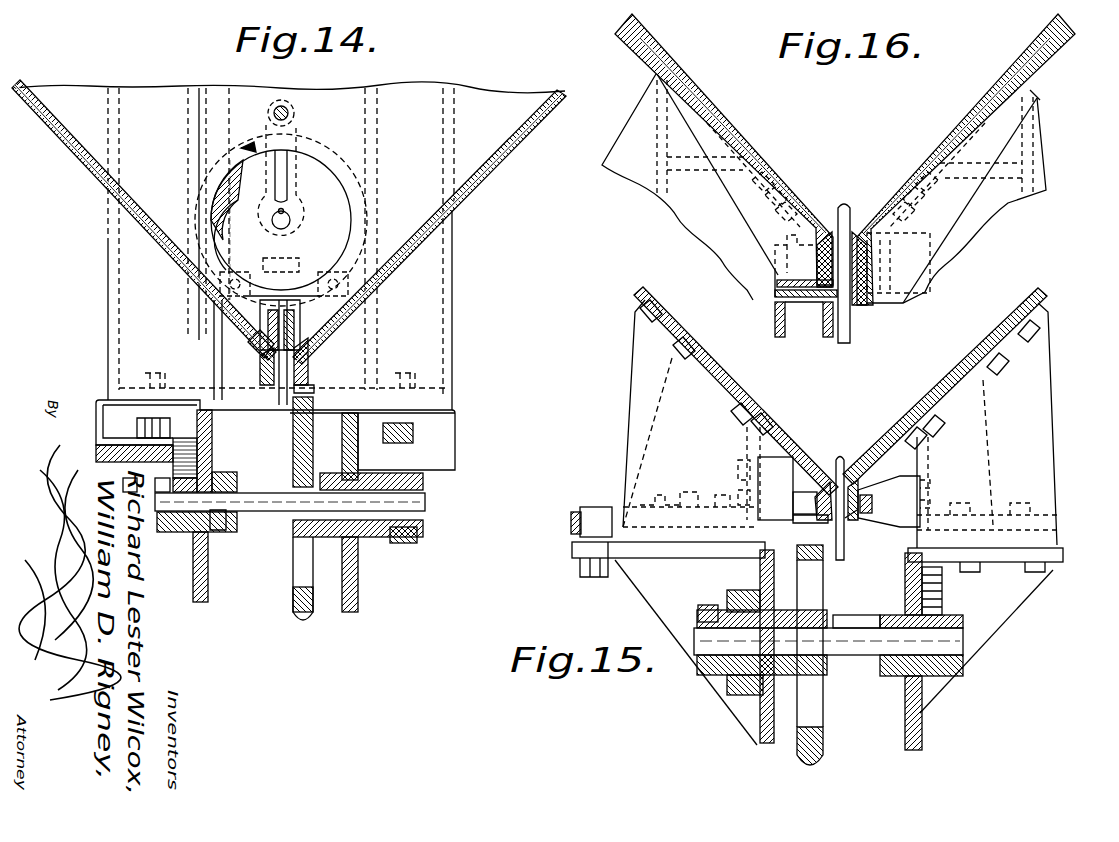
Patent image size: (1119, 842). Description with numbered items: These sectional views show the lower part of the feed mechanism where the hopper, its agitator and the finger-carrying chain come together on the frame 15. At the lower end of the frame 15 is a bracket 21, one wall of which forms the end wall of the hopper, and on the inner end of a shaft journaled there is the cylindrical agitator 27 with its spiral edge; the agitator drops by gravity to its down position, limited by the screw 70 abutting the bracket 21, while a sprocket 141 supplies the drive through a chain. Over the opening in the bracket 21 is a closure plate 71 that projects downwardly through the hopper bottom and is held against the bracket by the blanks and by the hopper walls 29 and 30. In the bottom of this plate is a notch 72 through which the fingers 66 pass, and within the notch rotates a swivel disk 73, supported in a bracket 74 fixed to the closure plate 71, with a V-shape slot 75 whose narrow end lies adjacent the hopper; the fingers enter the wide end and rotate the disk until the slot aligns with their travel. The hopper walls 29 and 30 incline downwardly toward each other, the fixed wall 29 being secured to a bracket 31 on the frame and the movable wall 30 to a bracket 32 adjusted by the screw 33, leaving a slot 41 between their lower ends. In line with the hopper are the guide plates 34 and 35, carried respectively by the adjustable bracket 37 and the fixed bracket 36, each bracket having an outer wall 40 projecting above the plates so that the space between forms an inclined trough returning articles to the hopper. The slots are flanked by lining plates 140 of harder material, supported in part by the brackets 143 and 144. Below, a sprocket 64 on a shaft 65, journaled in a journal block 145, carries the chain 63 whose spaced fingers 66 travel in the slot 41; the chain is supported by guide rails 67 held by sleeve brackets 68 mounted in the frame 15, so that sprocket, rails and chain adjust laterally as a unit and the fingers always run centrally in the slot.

In FIG. 14, the frame 15 is at (193, 570).
In FIG. 15, the frame 15 is at (647, 595).
In FIG. 14, the bracket 21 is at (125, 250).
In FIG. 14, the agitator 27 is at (335, 198).
In FIG. 14, the fixed hopper wall 29 is at (43, 101).
In FIG. 15, the fixed hopper wall 29 is at (1012, 332).
In FIG. 14, the movable hopper wall 30 is at (560, 92).
In FIG. 15, the movable hopper wall 30 is at (682, 300).
In FIG. 15, the bracket 31 is at (1052, 460).
In FIG. 15, the bracket 32 is at (638, 412).
In FIG. 15, the screw 33 is at (577, 512).
In FIG. 16, the guide plate 34 is at (752, 148).
In FIG. 16, the guide plate 35 is at (945, 145).
In FIG. 16, the bracket 36 is at (1032, 150).
In FIG. 16, the bracket 37 is at (635, 132).
In FIG. 16, the wall 40 is at (1035, 92).
In FIG. 15, the slot 41 is at (846, 522).
In FIG. 14, the sprocket chain 63 is at (316, 389).
In FIG. 16, the sprocket chain 63 is at (775, 293).
In FIG. 15, the sprocket chain 63 is at (820, 524).
In FIG. 14, the sprocket 64 is at (299, 618).
In FIG. 15, the sprocket 64 is at (825, 722).
In FIG. 14, the shaft 65 is at (428, 500).
In FIG. 15, the shaft 65 is at (855, 660).
In FIG. 14, the fingers 66 is at (310, 352).
In FIG. 16, the fingers 66 is at (846, 205).
In FIG. 15, the fingers 66 is at (842, 493).
In FIG. 16, the guide rails 67 is at (824, 323).
In FIG. 14, the sleeve brackets 68 is at (395, 545).
In FIG. 15, the sleeve brackets 68 is at (727, 680).
In FIG. 14, the screw 70 is at (290, 110).
In FIG. 14, the closure plate 71 is at (247, 97).
In FIG. 14, the notch 72 is at (302, 334).
In FIG. 14, the swivel disk 73 is at (292, 312).
In FIG. 14, the bracket 74 is at (306, 278).
In FIG. 14, the V-shape slot 75 is at (247, 344).
In FIG. 14, the lining plates 140 is at (260, 368).
In FIG. 16, the lining plates 140 is at (822, 255).
In FIG. 15, the lining plates 140 is at (862, 487).
In FIG. 14, the sprocket 141 is at (222, 535).
In FIG. 15, the sprocket 141 is at (918, 702).
In FIG. 15, the bracket 143 is at (890, 482).
In FIG. 15, the bracket 144 is at (785, 475).
In FIG. 14, the journal block 145 is at (214, 470).
In FIG. 15, the journal block 145 is at (942, 668).